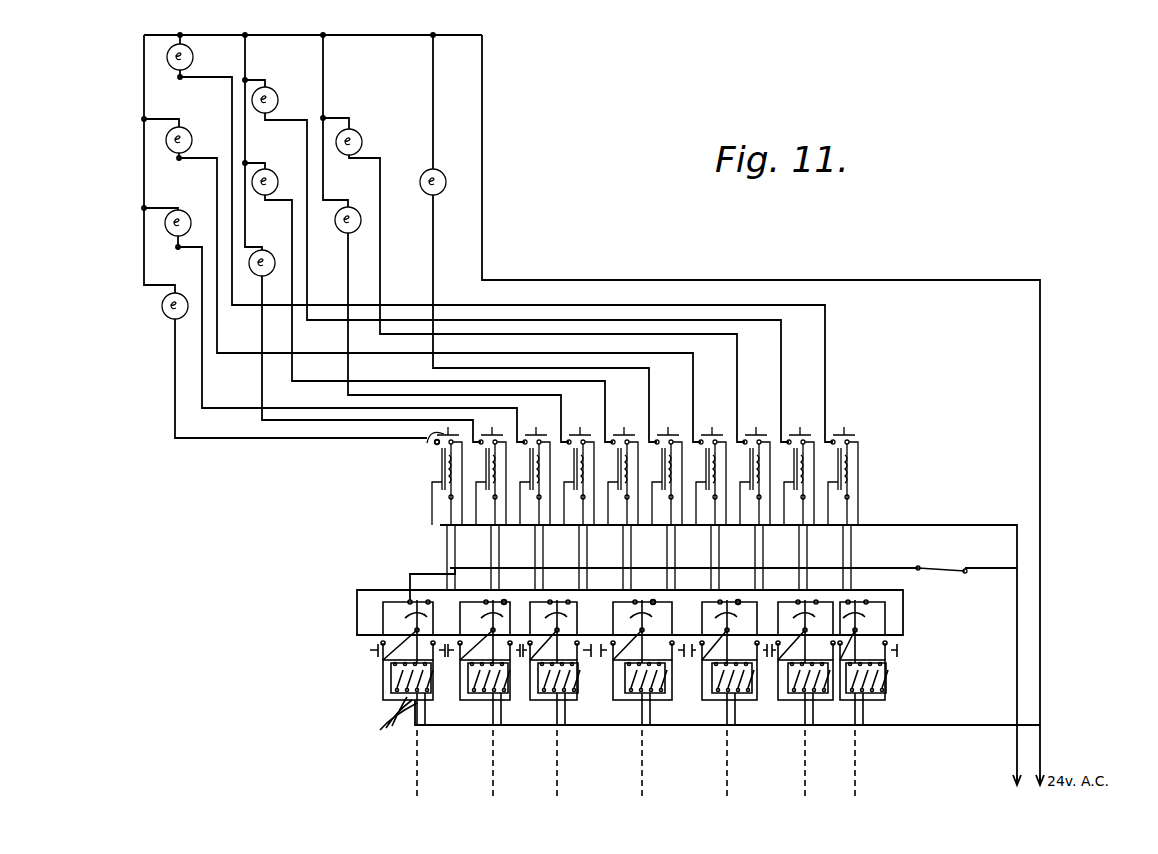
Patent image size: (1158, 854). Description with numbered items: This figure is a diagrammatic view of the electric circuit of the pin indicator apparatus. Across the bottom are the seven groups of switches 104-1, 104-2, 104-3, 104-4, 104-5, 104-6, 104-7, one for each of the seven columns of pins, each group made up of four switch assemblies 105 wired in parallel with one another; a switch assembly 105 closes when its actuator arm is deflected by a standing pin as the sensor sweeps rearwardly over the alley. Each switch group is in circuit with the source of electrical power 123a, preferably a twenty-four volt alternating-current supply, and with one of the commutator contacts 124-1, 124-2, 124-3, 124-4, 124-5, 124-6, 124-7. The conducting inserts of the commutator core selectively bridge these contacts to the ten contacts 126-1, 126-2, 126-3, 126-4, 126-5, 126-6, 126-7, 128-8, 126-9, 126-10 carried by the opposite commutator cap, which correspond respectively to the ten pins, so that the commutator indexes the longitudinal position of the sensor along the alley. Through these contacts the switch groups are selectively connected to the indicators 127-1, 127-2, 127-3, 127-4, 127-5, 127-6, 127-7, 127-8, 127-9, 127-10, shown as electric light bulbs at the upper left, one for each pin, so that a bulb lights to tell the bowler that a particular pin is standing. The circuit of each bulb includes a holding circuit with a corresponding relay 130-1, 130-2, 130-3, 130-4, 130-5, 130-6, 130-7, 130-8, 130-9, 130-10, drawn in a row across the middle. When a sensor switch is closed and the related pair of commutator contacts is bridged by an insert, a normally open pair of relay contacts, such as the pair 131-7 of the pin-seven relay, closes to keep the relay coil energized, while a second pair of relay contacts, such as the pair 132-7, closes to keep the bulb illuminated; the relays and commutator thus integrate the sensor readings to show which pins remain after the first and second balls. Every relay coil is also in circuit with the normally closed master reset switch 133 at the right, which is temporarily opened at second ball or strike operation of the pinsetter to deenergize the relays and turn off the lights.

The indicator 127-1 is at (441, 172).
The indicator 127-2 is at (362, 190).
The indicator 127-3 is at (358, 133).
The indicator 127-4 is at (266, 252).
The indicator 127-5 is at (283, 150).
The indicator 127-6 is at (271, 90).
The indicator 127-7 is at (179, 294).
The indicator 127-8 is at (195, 187).
The indicator 127-9 is at (184, 129).
The indicator 127-10 is at (205, 57).
The relay 130-1 is at (656, 508).
The relay 130-2 is at (568, 508).
The relay 130-3 is at (524, 508).
The relay 130-4 is at (480, 508).
The relay 130-5 is at (612, 508).
The relay 130-6 is at (788, 508).
The relay 130-7 is at (432, 478).
The relay 130-8 is at (744, 508).
The relay 130-9 is at (700, 508).
The relay 130-10 is at (831, 508).
The second pair of relay contacts 132-7 is at (431, 442).
The contact 126-1 is at (653, 600).
The contact 126-2 is at (560, 590).
The contact 126-3 is at (738, 600).
The contact 126-4 is at (485, 600).
The contact 126-5 is at (635, 600).
The contact 126-6 is at (797, 600).
The contact 126-7 is at (410, 598).
The switch contact 128-8 is at (514, 590).
The contact 126-9 is at (720, 600).
The contact 126-10 is at (848, 600).
The commutator contact 124-1 is at (615, 662).
The commutator contact 124-2 is at (532, 662).
The commutator contact 124-3 is at (704, 662).
The commutator contact 124-4 is at (462, 662).
The commutator contact 124-5 is at (780, 662).
The commutator contact 124-6 is at (415, 633).
The commutator contact 124-7 is at (842, 662).
The group of switches 104-1 is at (650, 696).
The group of switches 104-2 is at (565, 696).
The group of switches 104-3 is at (735, 696).
The group of switches 104-4 is at (501, 696).
The group of switches 104-5 is at (813, 696).
The group of switches 104-6 is at (426, 696).
The group of switches 104-7 is at (863, 696).
The switch assembly 105 is at (384, 719).
The normally open pair of relay contacts 131-7 is at (374, 652).
The master reset switch 133 is at (958, 554).
The source of electrical power 123a is at (1023, 798).